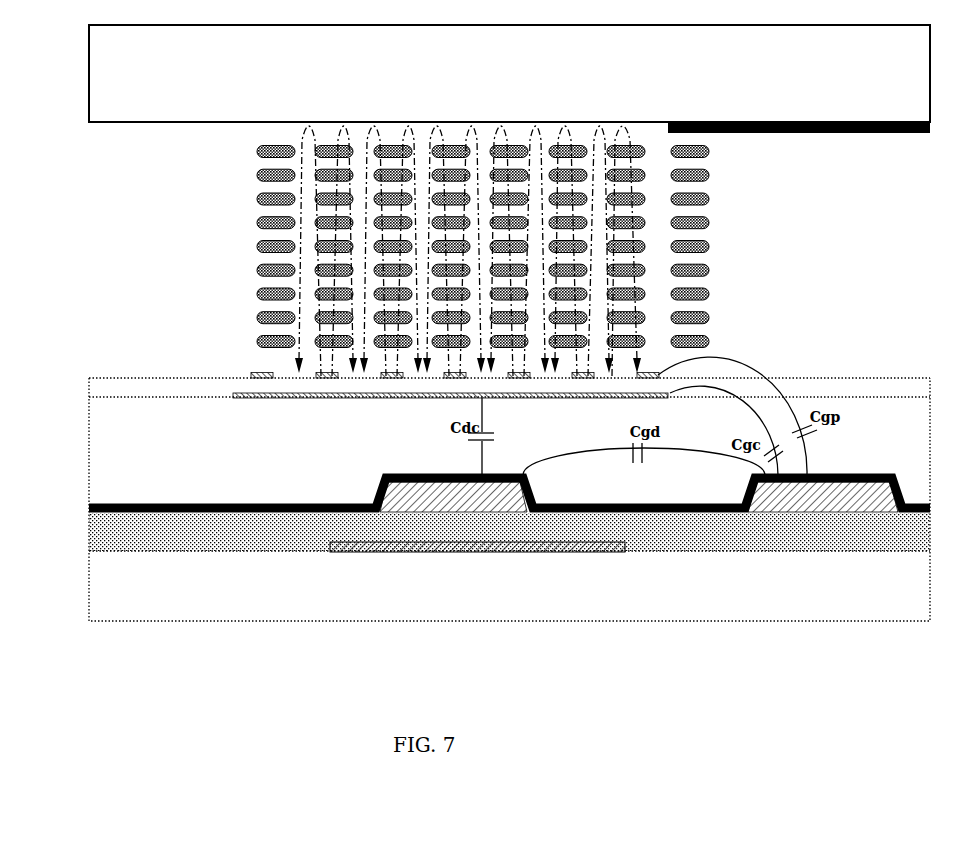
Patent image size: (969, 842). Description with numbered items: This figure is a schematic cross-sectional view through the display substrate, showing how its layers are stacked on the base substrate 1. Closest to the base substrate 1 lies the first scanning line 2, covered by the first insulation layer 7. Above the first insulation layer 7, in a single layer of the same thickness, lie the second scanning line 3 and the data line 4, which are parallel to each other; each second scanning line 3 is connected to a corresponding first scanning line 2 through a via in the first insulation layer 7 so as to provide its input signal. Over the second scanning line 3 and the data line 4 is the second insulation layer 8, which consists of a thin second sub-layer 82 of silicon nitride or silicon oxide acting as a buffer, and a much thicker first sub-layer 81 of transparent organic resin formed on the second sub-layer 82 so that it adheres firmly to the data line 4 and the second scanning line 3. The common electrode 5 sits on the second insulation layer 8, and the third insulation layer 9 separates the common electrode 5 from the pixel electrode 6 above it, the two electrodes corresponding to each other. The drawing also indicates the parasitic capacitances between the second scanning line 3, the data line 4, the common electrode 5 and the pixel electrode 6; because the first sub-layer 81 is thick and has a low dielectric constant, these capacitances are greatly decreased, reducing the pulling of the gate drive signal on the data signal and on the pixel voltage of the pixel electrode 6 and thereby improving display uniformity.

The base substrate 1 is at (867, 598).
The first scanning line 2 is at (372, 542).
The second scanning line 3 is at (788, 512).
The data line 4 is at (465, 512).
The common electrode 5 is at (235, 396).
The pixel electrode 6 is at (253, 373).
The first insulation layer 7 is at (89, 522).
The second insulation layer 8 is at (473, 457).
The first sub-layer 81 is at (100, 440).
The second sub-layer 82 is at (478, 498).
The third insulation layer 9 is at (100, 390).